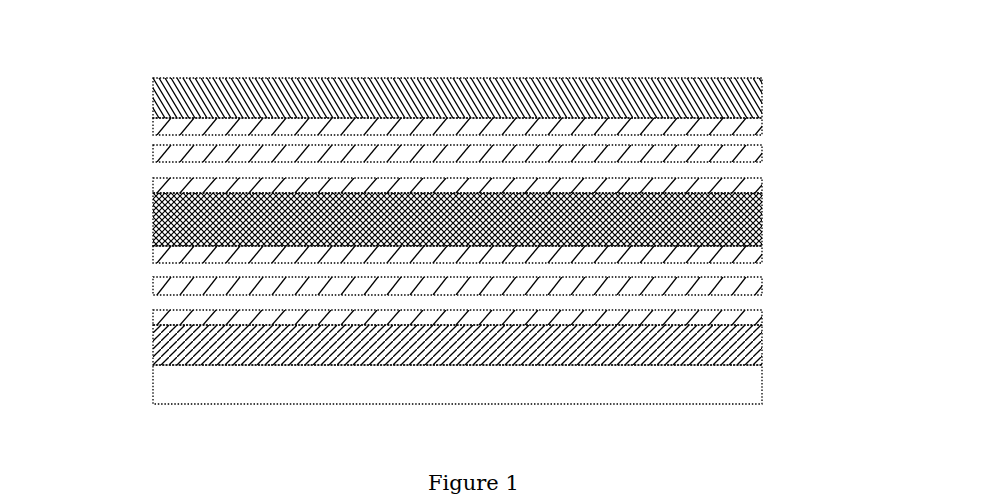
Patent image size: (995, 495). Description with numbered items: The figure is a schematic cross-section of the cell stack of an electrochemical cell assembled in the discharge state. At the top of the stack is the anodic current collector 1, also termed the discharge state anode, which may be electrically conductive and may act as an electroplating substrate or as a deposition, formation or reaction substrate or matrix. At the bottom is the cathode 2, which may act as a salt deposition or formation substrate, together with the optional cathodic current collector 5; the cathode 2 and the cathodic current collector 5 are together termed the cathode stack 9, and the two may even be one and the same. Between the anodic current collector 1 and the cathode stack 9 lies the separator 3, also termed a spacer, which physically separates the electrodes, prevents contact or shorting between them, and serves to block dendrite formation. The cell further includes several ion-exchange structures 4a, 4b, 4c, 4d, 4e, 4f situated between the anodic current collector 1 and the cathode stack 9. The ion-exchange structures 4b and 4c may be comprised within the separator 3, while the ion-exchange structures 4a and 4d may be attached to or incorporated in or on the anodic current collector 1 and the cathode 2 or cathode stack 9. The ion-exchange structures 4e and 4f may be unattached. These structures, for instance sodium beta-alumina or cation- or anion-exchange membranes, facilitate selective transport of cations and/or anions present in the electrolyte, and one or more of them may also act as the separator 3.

The anodic current collector 1 is at (148, 105).
The cathode 2 is at (148, 339).
The separator 3 is at (148, 228).
The ion-exchange structure 4a is at (773, 128).
The ion-exchange structure 4b is at (773, 185).
The ion-exchange structure 4c is at (780, 260).
The ion-exchange structure 4d is at (780, 312).
The ion-exchange structure 4e is at (148, 158).
The ion-exchange structure 4f is at (148, 287).
The cathodic current collector 5 is at (148, 392).
The cathode stack 9 is at (436, 364).